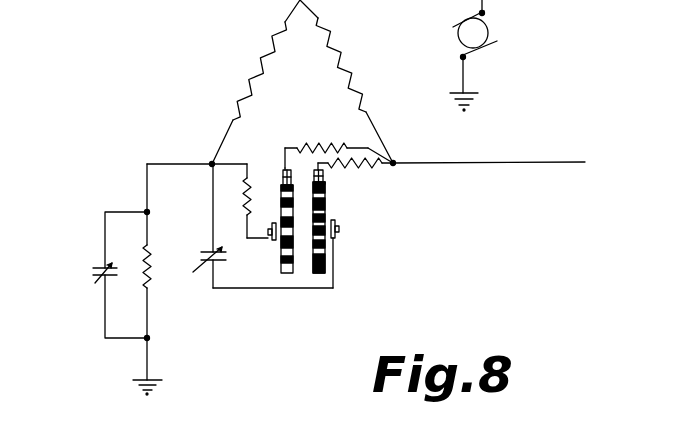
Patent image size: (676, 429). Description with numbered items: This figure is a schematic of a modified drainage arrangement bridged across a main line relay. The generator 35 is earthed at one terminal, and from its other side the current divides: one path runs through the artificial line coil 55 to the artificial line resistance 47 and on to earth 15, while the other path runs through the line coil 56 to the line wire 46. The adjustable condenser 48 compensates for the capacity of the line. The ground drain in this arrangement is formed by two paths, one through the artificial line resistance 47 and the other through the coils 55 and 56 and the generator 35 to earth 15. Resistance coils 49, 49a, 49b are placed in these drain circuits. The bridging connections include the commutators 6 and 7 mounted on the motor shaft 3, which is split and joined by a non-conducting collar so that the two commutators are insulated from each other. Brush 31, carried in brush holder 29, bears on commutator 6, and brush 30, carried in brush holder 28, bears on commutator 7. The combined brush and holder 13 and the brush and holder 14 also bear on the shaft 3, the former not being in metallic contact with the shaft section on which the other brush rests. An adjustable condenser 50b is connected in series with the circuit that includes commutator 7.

The artificial line coil 55 is at (249, 73).
The line coil 56 is at (350, 74).
The line wire 46 is at (489, 155).
The resistance coil 49 is at (339, 143).
The resistance coil 49a is at (247, 216).
The resistance coil 49b is at (366, 166).
The commutator 6 is at (281, 258).
The commutator 7 is at (326, 207).
The brush holder 29 is at (283, 174).
The brush 30 is at (324, 172).
The brush 31 is at (290, 169).
The brush holder 28 is at (326, 180).
The shaft 3 is at (339, 228).
The combined brush and holder 13 is at (338, 236).
The brush and holder 14 is at (273, 242).
The adjustable condenser 50b is at (197, 270).
The artificial line resistance 47 is at (151, 262).
The adjustable condenser 48 is at (92, 278).
The earth 15 is at (163, 384).
The generator 35 is at (489, 40).